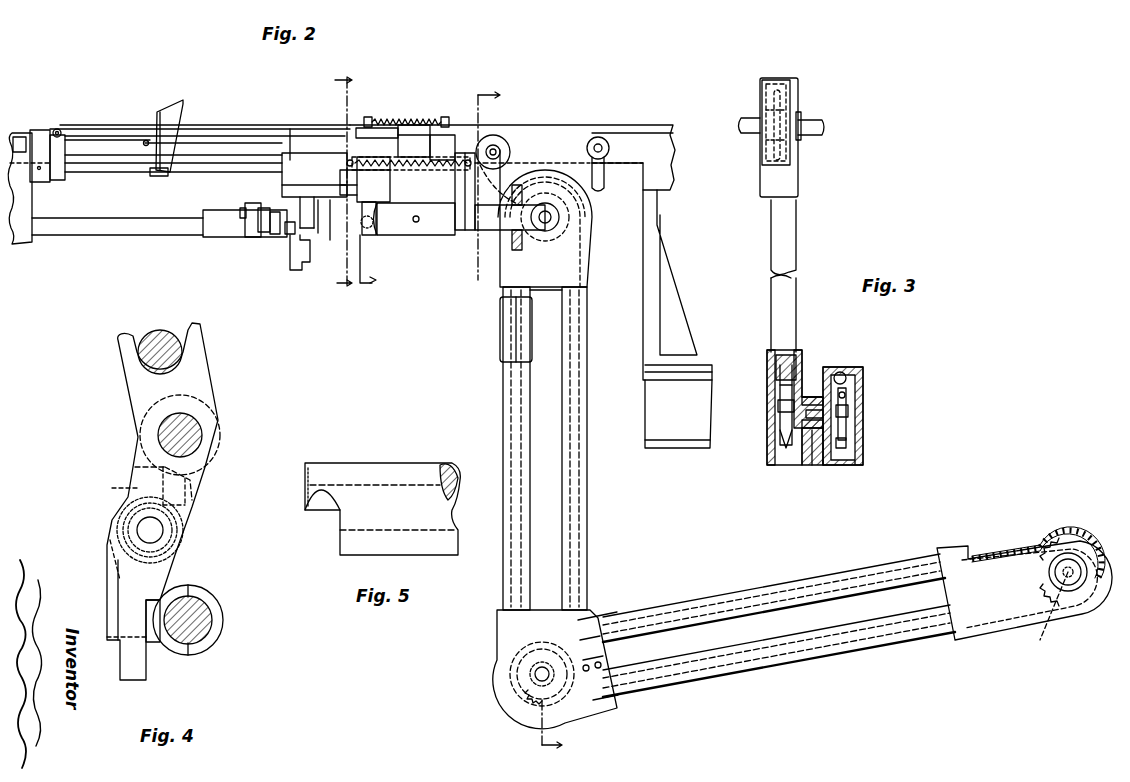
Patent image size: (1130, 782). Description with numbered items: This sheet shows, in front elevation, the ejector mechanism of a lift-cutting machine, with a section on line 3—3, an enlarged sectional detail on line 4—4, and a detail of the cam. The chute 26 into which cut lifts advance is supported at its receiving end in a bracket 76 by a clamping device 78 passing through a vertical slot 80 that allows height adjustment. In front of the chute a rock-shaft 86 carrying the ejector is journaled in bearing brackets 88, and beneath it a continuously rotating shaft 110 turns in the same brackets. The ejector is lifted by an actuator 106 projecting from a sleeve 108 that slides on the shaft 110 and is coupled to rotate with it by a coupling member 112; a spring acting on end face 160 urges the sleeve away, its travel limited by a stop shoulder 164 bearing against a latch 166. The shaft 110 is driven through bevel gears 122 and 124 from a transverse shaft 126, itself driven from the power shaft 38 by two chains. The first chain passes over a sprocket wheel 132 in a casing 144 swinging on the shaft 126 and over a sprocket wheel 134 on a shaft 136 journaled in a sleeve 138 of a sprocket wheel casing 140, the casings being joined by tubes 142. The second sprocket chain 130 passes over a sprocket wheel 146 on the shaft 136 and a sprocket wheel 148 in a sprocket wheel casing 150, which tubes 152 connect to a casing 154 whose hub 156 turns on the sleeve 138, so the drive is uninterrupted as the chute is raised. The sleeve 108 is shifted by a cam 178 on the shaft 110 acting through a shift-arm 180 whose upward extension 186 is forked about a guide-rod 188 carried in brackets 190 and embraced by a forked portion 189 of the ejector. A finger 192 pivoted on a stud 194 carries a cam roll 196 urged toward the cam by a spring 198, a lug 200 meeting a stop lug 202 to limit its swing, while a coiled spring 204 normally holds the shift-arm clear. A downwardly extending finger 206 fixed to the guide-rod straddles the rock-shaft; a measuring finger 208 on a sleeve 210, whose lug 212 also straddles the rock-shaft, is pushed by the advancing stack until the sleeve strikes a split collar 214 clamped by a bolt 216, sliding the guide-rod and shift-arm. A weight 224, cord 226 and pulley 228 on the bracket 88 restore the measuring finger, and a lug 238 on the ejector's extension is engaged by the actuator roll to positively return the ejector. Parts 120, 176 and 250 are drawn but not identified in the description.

In FIG. 2, the section line 3— 3 is at (513, 421).
In FIG. 2, the section line 4— 4 is at (335, 179).
In FIG. 2, the chute 26 is at (665, 128).
In FIG. 2, the power shaft 38 is at (1045, 614).
In FIG. 2, the bracket 76 is at (673, 300).
In FIG. 2, the clamping device 78 is at (602, 140).
In FIG. 2, the vertical slot 80 is at (604, 180).
In FIG. 2, the rock-shaft 86 is at (96, 160).
In FIG. 2, the bearing brackets 88 is at (16, 244).
In FIG. 2, the actuator 106 is at (305, 210).
In FIG. 2, the actuator sleeve 108 is at (290, 240).
In FIG. 2, the lower rail 110 is at (145, 228).
In FIG. 2, the coupling member 112 is at (220, 236).
In FIG. 2, the vertical block 120 is at (465, 191).
In FIG. 2, the bevel gear 122 is at (520, 240).
In FIG. 2, the bevel gear 124 is at (588, 195).
In FIG. 2, the transverse horizontal shaft 126 is at (550, 220).
In FIG. 2, the sprocket chain 130 is at (840, 590).
In FIG. 2, the sprocket wheel 132 is at (545, 245).
In FIG. 3, the sprocket wheel 134 is at (858, 428).
In FIG. 2, the shaft 136 is at (530, 680).
In FIG. 3, the sleeve 138 is at (850, 410).
In FIG. 2, the sprocket wheel casing 140 is at (498, 630).
In FIG. 2, the tubes 142 is at (560, 380).
In FIG. 2, the casing 144 is at (588, 290).
In FIG. 3, the sprocket wheel 146 is at (846, 395).
In FIG. 2, the sprocket wheel 148 is at (1050, 580).
In FIG. 2, the sprocket wheel casing 150 is at (1010, 535).
In FIG. 2, the tubes 152 is at (758, 617).
In FIG. 2, the casing 154 is at (588, 712).
In FIG. 3, the hub 156 is at (810, 440).
In FIG. 2, the end face 160 is at (366, 230).
In FIG. 2, the stop shoulder 164 is at (330, 240).
In FIG. 2, the latch 166 is at (260, 208).
In FIG. 2, the bushing 176 is at (383, 235).
In FIG. 4, the cam 178 is at (212, 598).
In FIG. 4, the shift-arm 180 is at (200, 482).
In FIG. 2, the upward extension 186 is at (358, 135).
In FIG. 2, the guide-rod 188 is at (240, 126).
In FIG. 2, the forked portion 189 is at (290, 129).
In FIG. 2, the brackets 190 is at (38, 130).
In FIG. 2, the finger 192 is at (360, 210).
In FIG. 4, the stud 194 is at (142, 525).
In FIG. 2, the cam roll 196 is at (387, 260).
In FIG. 4, the spring 198 is at (180, 536).
In FIG. 4, the upwardly extending lug 200 is at (190, 496).
In FIG. 4, the stop lug 202 is at (140, 488).
In FIG. 2, the coiled spring 204 is at (350, 163).
In FIG. 2, the downwardly extending finger 206 is at (418, 125).
In FIG. 2, the measuring finger 208 is at (168, 120).
In FIG. 2, the sleeve 210 is at (84, 128).
In FIG. 2, the lug 212 is at (156, 176).
In FIG. 2, the split collar 214 is at (58, 152).
In FIG. 2, the bolt 216 is at (59, 129).
In FIG. 2, the weight 224 is at (500, 322).
In FIG. 2, the cord 226 is at (190, 141).
In FIG. 2, the pulley 228 is at (503, 148).
In FIG. 2, the lug 238 is at (300, 246).
In FIG. 2, the spring 250 is at (413, 118).